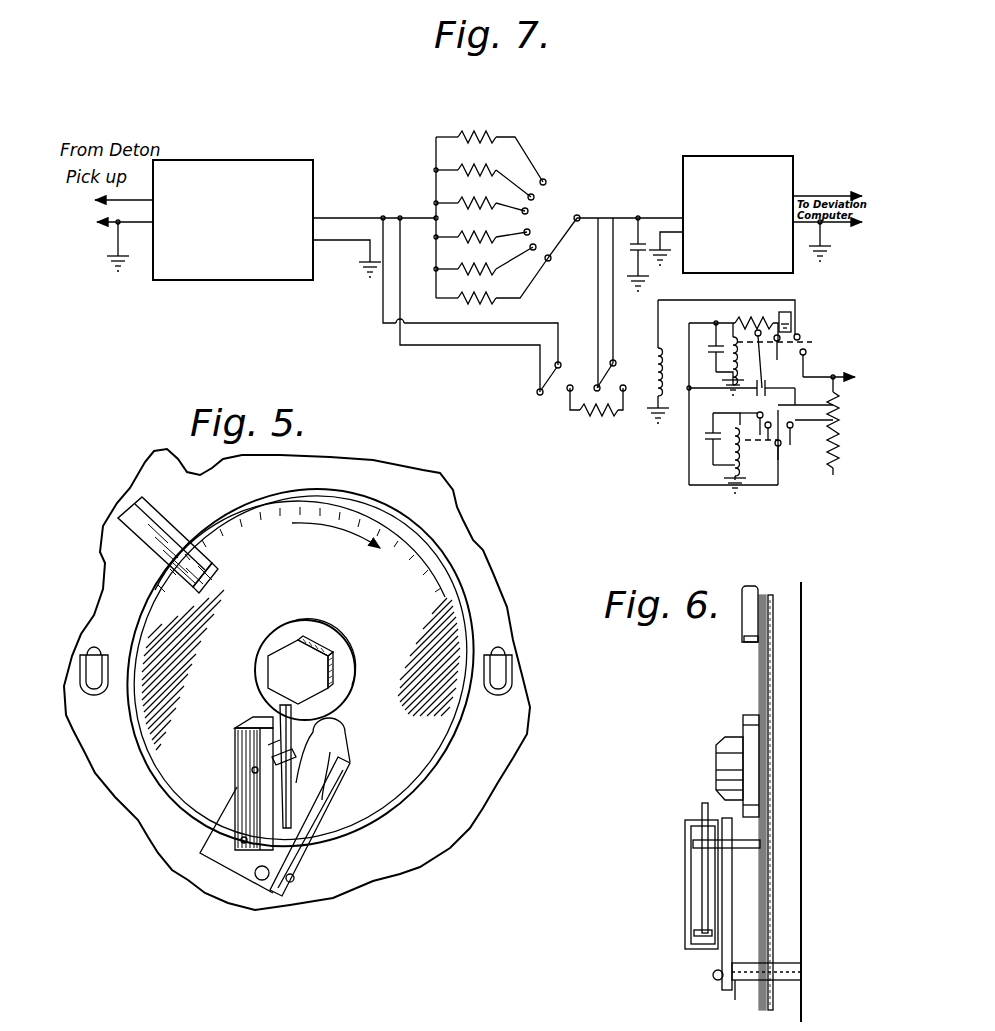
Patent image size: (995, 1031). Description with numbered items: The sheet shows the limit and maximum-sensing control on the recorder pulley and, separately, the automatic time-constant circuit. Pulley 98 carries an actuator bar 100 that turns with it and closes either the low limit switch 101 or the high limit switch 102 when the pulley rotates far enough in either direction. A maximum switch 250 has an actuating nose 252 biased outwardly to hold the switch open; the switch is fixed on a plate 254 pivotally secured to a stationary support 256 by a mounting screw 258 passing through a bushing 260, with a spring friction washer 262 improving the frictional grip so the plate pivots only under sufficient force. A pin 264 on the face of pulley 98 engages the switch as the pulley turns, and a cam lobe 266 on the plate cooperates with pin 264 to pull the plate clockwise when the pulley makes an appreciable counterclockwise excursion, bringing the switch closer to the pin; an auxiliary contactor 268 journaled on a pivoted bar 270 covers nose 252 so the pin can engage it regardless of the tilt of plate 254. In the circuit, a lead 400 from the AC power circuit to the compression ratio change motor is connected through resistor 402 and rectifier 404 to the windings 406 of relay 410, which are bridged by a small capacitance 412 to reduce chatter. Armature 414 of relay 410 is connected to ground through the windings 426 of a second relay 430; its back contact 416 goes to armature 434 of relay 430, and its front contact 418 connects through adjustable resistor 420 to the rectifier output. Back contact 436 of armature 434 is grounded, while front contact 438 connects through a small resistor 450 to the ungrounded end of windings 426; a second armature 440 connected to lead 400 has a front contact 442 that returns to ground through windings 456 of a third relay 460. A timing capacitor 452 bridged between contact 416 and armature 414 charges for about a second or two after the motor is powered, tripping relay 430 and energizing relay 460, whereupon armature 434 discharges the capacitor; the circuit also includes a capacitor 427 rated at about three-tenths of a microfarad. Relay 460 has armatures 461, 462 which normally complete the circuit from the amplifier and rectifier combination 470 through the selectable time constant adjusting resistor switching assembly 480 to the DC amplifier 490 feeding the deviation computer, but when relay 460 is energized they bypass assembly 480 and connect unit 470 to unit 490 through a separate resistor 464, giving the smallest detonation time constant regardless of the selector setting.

In FIG. 5, the pulley 98 is at (254, 561).
In FIG. 6, the pulley 98 is at (758, 672).
In FIG. 5, the actuator bar 100 is at (158, 522).
In FIG. 6, the actuator bar 100 is at (742, 638).
In FIG. 5, the low limit switch 101 is at (94, 690).
In FIG. 5, the high limit switch 102 is at (498, 690).
In FIG. 5, the maximum switch 250 is at (264, 726).
In FIG. 6, the maximum switch 250 is at (695, 858).
In FIG. 5, the actuating nose 252 is at (335, 737).
In FIG. 5, the plate 254 is at (340, 790).
In FIG. 6, the plate 254 is at (734, 950).
In FIG. 6, the stationary support 256 is at (803, 942).
In FIG. 5, the mounting screw 258 is at (258, 882).
In FIG. 6, the mounting screw 258 is at (716, 980).
In FIG. 6, the bushing 260 is at (760, 973).
In FIG. 6, the spring friction washer 262 is at (736, 985).
In FIG. 5, the pin 264 is at (300, 752).
In FIG. 6, the pin 264 is at (760, 843).
In FIG. 5, the cam lobe 266 is at (320, 812).
In FIG. 5, the auxiliary contactor 268 is at (336, 712).
In FIG. 6, the auxiliary contactor 268 is at (702, 890).
In FIG. 5, the pivoted bar 270 is at (257, 824).
In FIG. 6, the pivoted bar 270 is at (695, 926).
In FIG. 7, the lead 400 is at (795, 405).
In FIG. 7, the resistor 402 is at (830, 393).
In FIG. 7, the rectifier 404 is at (836, 416).
In FIG. 7, the windings 406 is at (752, 460).
In FIG. 7, the relay 410 is at (790, 432).
In FIG. 7, the capacitance 412 is at (715, 430).
In FIG. 7, the armature 414 is at (795, 450).
In FIG. 7, the back contact 416 is at (795, 428).
In FIG. 7, the front contact 418 is at (745, 424).
In FIG. 7, the adjustable resistor 420 is at (836, 432).
In FIG. 7, the windings 426 is at (741, 359).
In FIG. 7, the capacitor 427 is at (709, 346).
In FIG. 7, the second relay 430 is at (808, 318).
In FIG. 7, the armature 434 is at (774, 359).
In FIG. 7, the back contact 436 is at (777, 335).
In FIG. 7, the front contact 438 is at (778, 328).
In FIG. 7, the second armature 440 is at (835, 345).
In FIG. 7, the front contact 442 is at (800, 340).
In FIG. 7, the small resistor 450 is at (736, 315).
In FIG. 7, the timing capacitor 452 is at (758, 388).
In FIG. 7, the windings 456 is at (665, 368).
In FIG. 7, the third relay 460 is at (633, 440).
In FIG. 7, the armature 461 is at (608, 390).
In FIG. 7, the armature 462 is at (551, 393).
In FIG. 7, the resistor 464 is at (597, 415).
In FIG. 7, the amplifier and rectifier combination 470 is at (313, 160).
In FIG. 7, the time constant adjusting resistor switching assembly 480 is at (562, 156).
In FIG. 7, the DC amplifier 490 is at (740, 156).